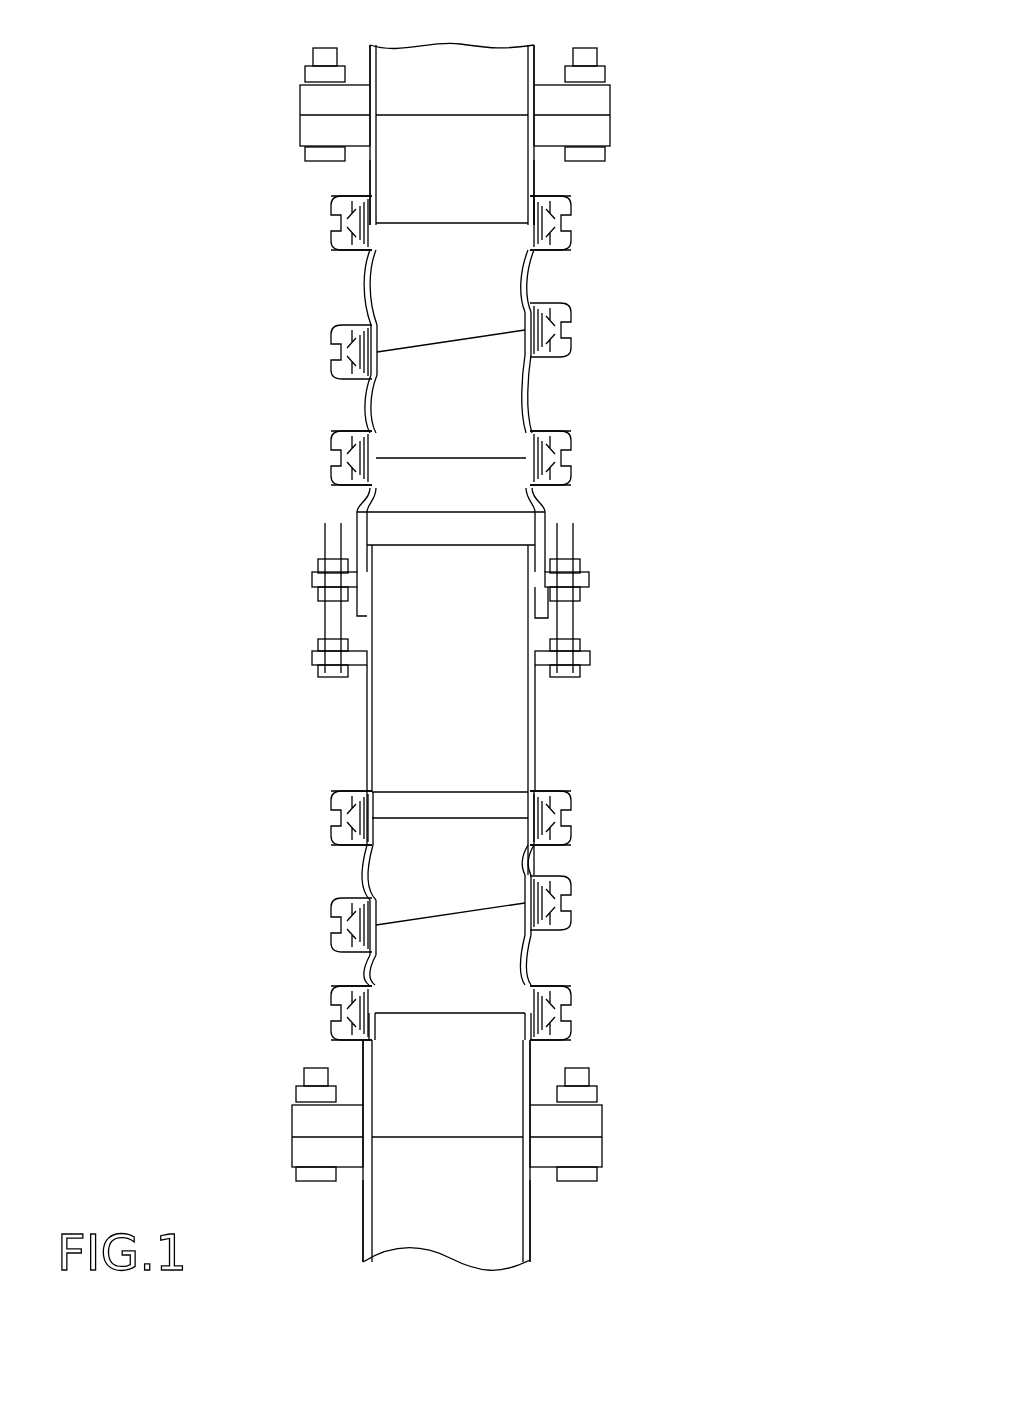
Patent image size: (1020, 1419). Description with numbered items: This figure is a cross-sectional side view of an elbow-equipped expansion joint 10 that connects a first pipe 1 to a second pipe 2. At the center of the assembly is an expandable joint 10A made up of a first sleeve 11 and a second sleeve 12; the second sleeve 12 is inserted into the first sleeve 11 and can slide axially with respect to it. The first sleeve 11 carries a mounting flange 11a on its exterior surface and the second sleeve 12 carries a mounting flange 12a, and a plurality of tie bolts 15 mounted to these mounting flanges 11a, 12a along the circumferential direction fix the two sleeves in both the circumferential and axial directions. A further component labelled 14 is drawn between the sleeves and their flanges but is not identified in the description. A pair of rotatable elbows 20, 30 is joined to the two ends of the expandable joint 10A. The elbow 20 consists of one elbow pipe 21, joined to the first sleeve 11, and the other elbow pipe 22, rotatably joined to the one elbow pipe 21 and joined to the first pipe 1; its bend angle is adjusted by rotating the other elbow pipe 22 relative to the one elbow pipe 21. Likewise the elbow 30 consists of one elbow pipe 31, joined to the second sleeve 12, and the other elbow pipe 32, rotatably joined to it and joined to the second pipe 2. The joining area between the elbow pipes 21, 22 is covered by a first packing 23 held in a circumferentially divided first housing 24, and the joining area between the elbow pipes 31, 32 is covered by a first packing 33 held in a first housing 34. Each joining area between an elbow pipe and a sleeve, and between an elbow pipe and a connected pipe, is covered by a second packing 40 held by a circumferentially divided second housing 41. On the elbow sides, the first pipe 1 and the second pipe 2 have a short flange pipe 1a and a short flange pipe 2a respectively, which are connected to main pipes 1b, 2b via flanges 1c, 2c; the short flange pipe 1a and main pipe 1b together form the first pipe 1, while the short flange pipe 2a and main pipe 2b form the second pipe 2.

The first pipe 1 is at (454, 112).
The short flange pipe 1a is at (540, 176).
The main pipe 1b is at (537, 60).
The flange 1c is at (325, 100).
The second pipe 2 is at (489, 1147).
The short flange pipe 2a is at (538, 1056).
The main pipe 2b is at (532, 1222).
The flange 2c is at (600, 1148).
The elbow-equipped expansion joint 10 is at (307, 731).
The expandable joint 10A is at (311, 503).
The first sleeve 11 is at (546, 515).
The mounting flange 11a is at (590, 580).
The second sleeve 12 is at (537, 765).
The mounting flange 12a is at (542, 680).
The gasket 14 is at (530, 600).
The tie bolts 15 is at (578, 632).
The elbow 20 is at (550, 294).
The one elbow pipe 21 is at (368, 404).
The other elbow pipe 22 is at (367, 283).
The first packing 23 is at (350, 362).
The first housing 24 is at (345, 338).
The elbow 30 is at (366, 880).
The one elbow pipe 31 is at (522, 840).
The other elbow pipe 32 is at (538, 950).
The first packing 33 is at (565, 905).
The first housing 34 is at (555, 880).
The second packing 40 is at (562, 245).
The second housing 41 is at (568, 218).